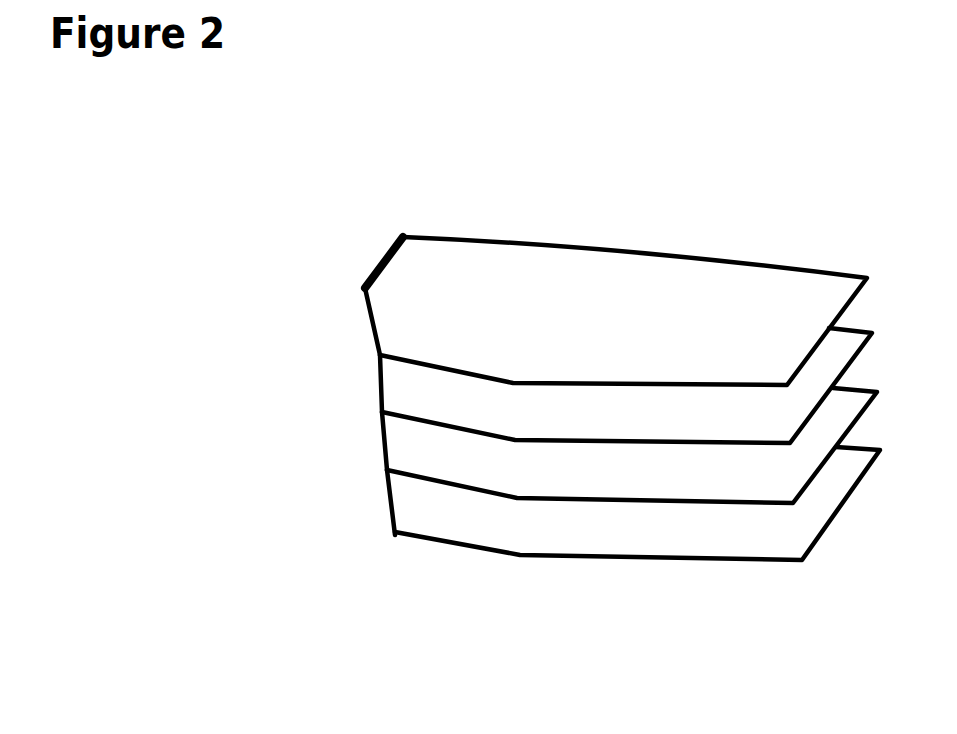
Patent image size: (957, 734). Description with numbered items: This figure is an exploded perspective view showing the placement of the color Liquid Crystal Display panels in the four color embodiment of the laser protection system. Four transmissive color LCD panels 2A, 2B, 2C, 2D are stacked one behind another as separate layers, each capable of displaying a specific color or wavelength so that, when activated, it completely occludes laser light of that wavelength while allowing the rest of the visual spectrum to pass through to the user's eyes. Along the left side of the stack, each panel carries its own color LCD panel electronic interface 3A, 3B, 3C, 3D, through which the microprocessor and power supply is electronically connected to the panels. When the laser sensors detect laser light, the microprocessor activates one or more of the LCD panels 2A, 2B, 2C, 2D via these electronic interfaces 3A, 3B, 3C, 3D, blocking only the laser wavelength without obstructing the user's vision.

The color Liquid Crystal Display panel 2A is at (672, 318).
The color Liquid Crystal Display panel 2B is at (415, 388).
The color Liquid Crystal Display panel 2C is at (447, 465).
The color Liquid Crystal Display panel 2D is at (681, 542).
The color LCD panel electronic interface 3A is at (378, 249).
The color LCD panel electronic interface 3B is at (368, 330).
The color LCD panel electronic interface 3C is at (368, 395).
The color LCD panel electronic interface 3D is at (372, 458).